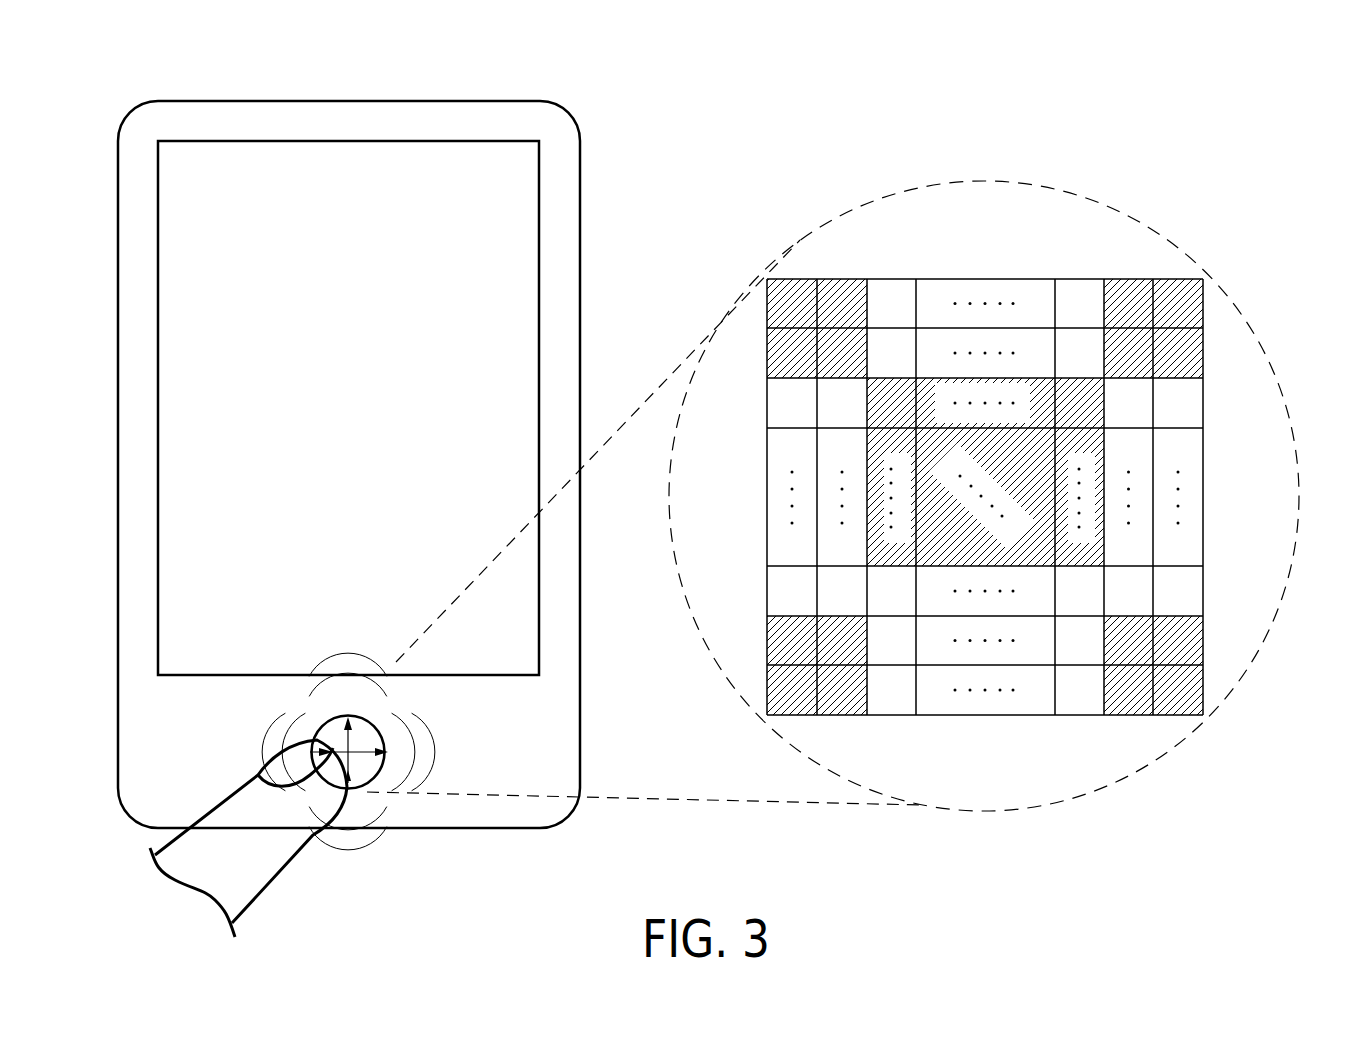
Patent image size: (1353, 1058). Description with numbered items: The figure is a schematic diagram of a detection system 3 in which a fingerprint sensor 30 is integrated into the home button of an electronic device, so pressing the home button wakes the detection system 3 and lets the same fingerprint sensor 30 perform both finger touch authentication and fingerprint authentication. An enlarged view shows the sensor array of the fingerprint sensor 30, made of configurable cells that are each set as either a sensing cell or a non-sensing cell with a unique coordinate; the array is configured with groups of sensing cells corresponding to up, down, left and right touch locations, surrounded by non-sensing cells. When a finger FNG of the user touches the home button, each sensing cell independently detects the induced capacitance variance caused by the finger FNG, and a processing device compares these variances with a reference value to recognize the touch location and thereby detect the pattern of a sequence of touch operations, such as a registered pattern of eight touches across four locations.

The detection system 3 is at (1232, 116).
The fingerprint sensor 30 is at (382, 773).
The finger FNG is at (273, 883).